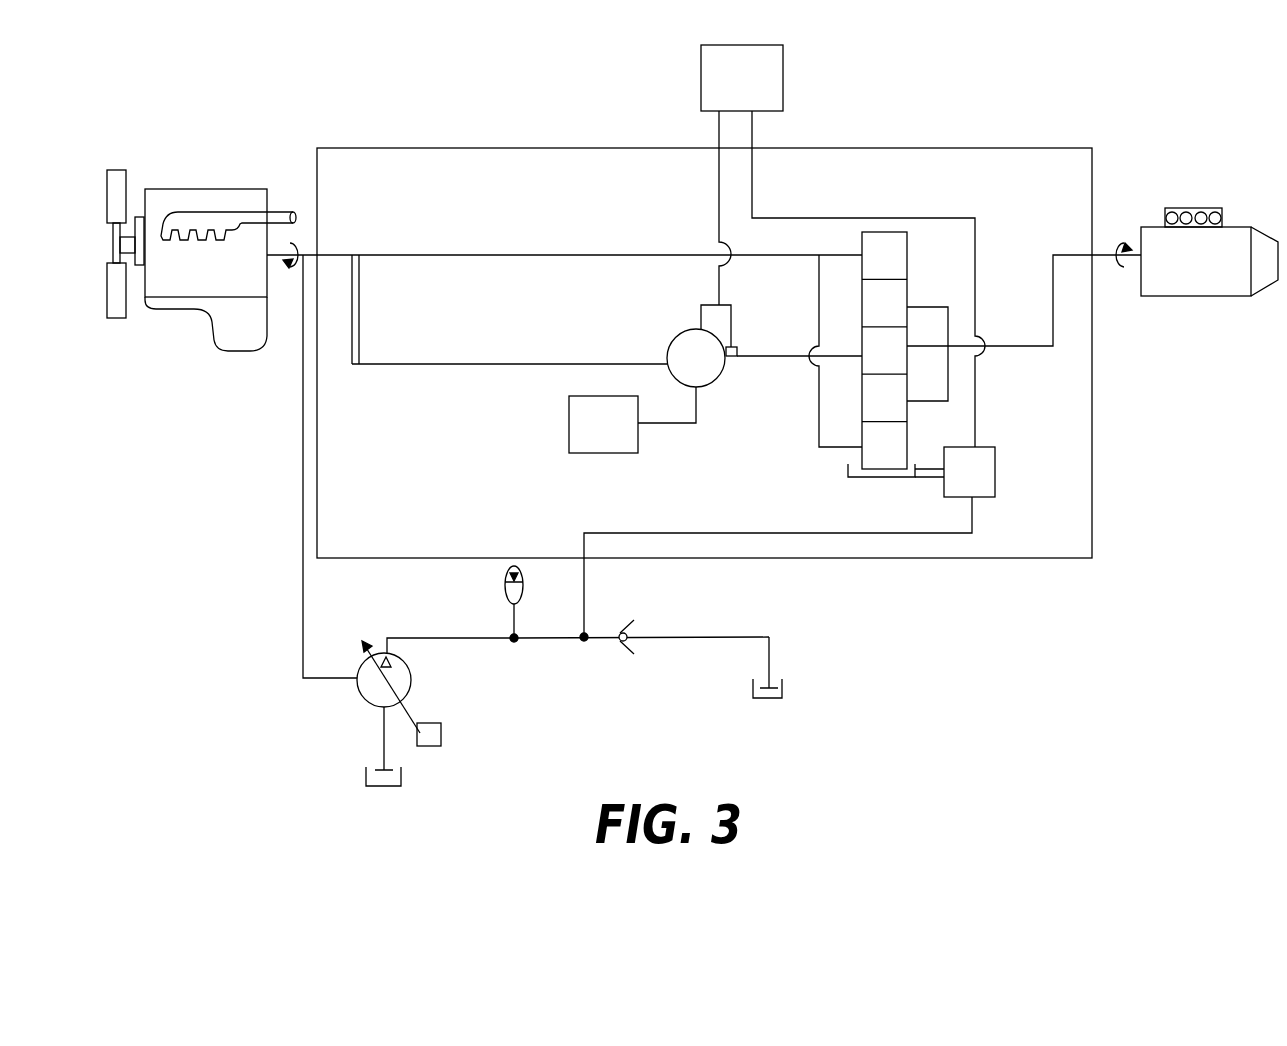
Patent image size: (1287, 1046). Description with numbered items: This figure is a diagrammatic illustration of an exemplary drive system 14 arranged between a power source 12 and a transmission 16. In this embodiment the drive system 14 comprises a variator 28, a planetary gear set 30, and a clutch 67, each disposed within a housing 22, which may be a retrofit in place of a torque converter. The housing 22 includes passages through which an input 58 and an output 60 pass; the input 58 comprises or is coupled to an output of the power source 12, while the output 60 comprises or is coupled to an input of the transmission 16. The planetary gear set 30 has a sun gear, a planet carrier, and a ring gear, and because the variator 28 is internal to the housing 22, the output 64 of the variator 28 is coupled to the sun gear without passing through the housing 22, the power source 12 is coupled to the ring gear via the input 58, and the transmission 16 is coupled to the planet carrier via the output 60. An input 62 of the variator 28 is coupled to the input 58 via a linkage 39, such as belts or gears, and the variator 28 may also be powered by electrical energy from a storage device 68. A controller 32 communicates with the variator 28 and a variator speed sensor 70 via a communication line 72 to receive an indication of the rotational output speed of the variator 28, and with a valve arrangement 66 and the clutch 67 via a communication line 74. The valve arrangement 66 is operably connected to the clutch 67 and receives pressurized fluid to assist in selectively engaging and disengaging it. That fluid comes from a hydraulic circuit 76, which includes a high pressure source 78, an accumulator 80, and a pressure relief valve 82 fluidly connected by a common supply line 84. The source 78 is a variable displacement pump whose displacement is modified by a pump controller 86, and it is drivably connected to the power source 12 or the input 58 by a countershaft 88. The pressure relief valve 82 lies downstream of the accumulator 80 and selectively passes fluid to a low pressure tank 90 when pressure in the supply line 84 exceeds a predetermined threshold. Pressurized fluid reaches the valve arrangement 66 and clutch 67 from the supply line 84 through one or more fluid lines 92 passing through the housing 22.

The power source 12 is at (202, 260).
The drive system 14 is at (938, 198).
The transmission 16 is at (1209, 252).
The housing 22 is at (803, 148).
The variator 28 is at (696, 358).
The planetary gear set 30 is at (910, 258).
The controller 32 is at (742, 78).
The linkage 39 is at (360, 321).
The input 58 is at (332, 254).
The output 60 is at (1060, 254).
The input of the variator 62 is at (487, 365).
The output of the variator 64 is at (775, 360).
The valve arrangement 66 is at (955, 472).
The clutch 67 is at (850, 478).
The storage device 68 is at (632, 420).
The variator speed sensor 70 is at (737, 349).
The communication line 72 is at (719, 180).
The communication line 74 is at (975, 410).
The hydraulic circuit 76 is at (822, 643).
The high pressure source 78 is at (411, 680).
The accumulator 80 is at (506, 596).
The pressure relief valve 82 is at (625, 650).
The supply line 84 is at (552, 640).
The pump controller 86 is at (441, 735).
The countershaft 88 is at (300, 503).
The low pressure tank 90 is at (401, 777).
The fluid line 92 is at (640, 533).